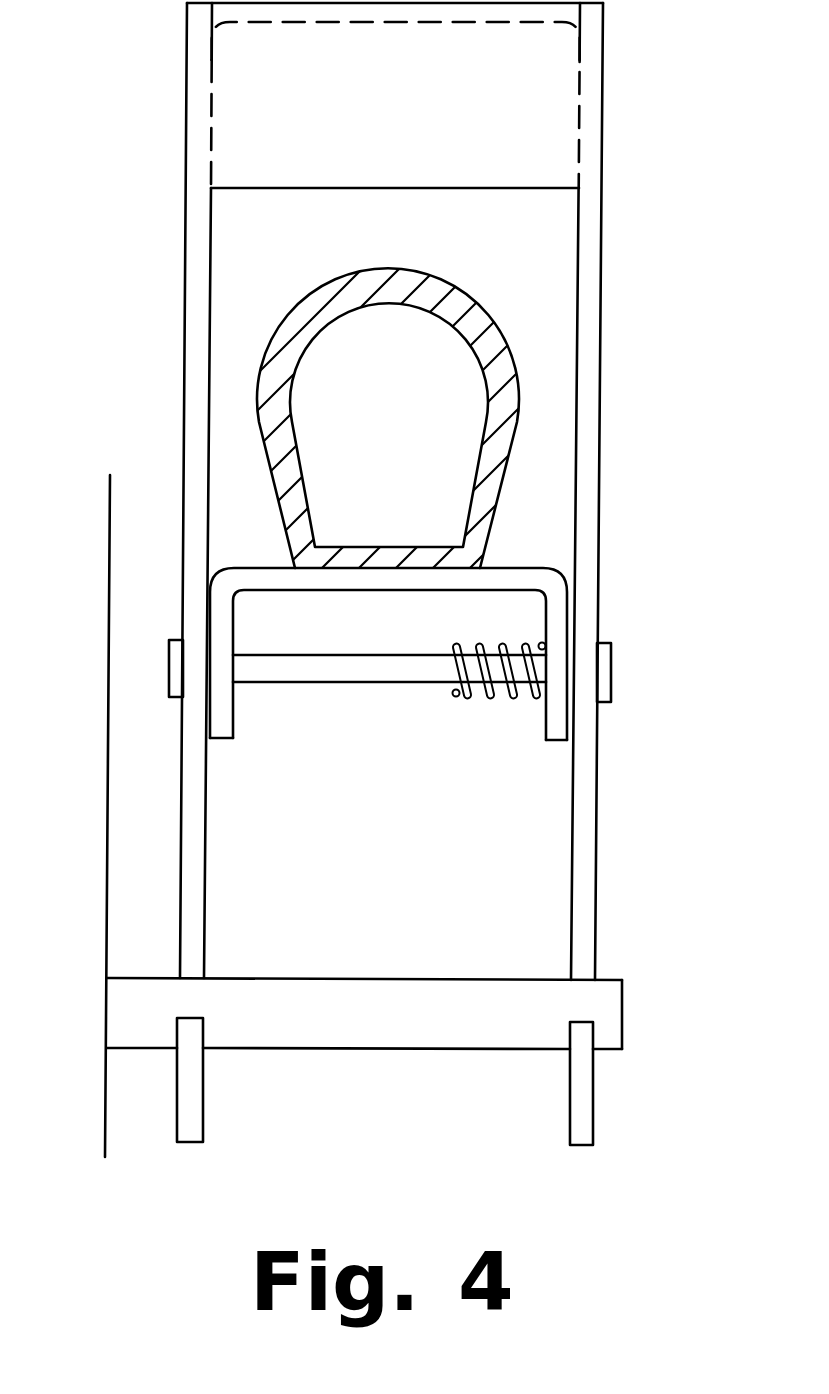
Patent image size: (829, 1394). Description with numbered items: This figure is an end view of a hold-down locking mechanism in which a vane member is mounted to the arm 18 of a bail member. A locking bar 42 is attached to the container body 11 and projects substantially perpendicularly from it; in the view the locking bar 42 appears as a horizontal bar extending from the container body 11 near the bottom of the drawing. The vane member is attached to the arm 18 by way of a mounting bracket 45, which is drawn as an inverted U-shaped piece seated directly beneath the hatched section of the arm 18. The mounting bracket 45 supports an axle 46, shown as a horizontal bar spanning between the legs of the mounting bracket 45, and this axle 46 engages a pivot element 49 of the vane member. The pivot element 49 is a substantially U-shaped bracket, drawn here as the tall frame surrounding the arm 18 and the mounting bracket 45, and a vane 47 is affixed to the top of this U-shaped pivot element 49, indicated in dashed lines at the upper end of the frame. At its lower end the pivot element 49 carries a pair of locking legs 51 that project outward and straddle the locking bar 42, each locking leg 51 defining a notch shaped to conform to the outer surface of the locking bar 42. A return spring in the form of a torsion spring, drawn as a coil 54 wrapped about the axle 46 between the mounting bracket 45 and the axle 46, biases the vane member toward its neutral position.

The container body 11 is at (108, 577).
The arm 18 is at (510, 373).
The locking bar 42 is at (453, 995).
The mounting bracket 45 is at (407, 578).
The axle 46 is at (292, 672).
The vane 47 is at (540, 79).
The pivot element 49 is at (590, 253).
The locking legs 51 is at (580, 1100).
The coil spring 54 is at (497, 698).